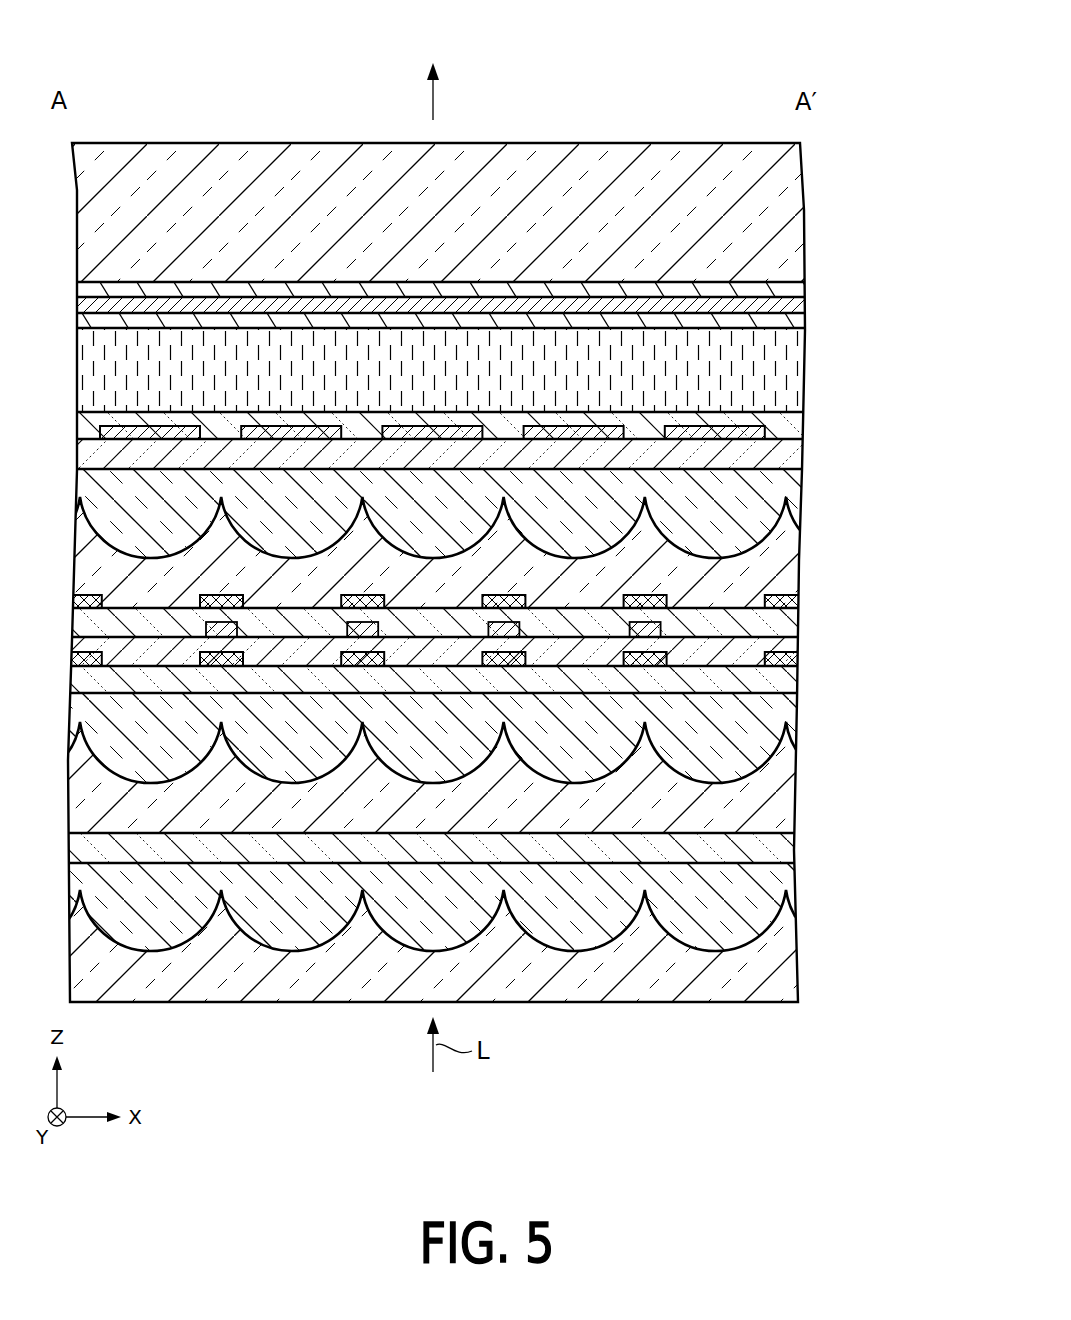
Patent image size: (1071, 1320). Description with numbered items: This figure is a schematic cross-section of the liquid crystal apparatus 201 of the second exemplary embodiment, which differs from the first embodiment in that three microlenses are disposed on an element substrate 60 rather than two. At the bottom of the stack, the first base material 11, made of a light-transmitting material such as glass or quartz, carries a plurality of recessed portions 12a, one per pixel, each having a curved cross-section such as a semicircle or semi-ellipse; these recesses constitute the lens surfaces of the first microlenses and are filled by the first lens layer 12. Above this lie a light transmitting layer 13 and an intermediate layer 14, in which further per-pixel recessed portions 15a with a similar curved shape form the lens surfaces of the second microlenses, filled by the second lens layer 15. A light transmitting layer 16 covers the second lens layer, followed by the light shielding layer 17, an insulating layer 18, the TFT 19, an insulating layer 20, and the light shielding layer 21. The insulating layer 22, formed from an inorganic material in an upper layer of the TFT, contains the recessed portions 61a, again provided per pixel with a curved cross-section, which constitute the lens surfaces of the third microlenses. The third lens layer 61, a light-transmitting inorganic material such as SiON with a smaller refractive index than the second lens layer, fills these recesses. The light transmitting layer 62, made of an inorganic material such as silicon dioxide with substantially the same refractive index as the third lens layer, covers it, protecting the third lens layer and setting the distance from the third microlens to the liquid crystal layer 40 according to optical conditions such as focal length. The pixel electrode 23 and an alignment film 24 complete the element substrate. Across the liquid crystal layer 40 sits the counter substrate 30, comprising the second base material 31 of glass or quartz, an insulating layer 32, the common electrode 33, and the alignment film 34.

The liquid crystal apparatus 201 is at (473, 504).
The counter substrate 30 is at (503, 249).
The second base material 31 is at (793, 205).
The insulating layer 32 is at (793, 292).
The common electrode 33 is at (795, 303).
The alignment film 34 is at (468, 334).
The liquid crystal layer 40 is at (800, 370).
The element substrate 60 is at (473, 681).
The alignment film 24 is at (468, 401).
The pixel electrode 23 is at (577, 426).
The light transmitting layer 62 is at (792, 450).
The third lens layer 61 is at (463, 528).
The recessed portion 61a is at (551, 551).
The insulating layer 22 is at (797, 555).
The light shielding layer 21 is at (512, 595).
The insulating layer 20 is at (793, 618).
The TFT 19 is at (649, 621).
The insulating layer 18 is at (793, 643).
The light shielding layer 17 is at (648, 651).
The light transmitting layer 16 is at (783, 678).
The second lens layer 15 is at (463, 753).
The recessed portion 15a is at (553, 777).
The intermediate layer 14 is at (780, 800).
The light transmitting layer 13 is at (793, 843).
The first lens layer 12 is at (463, 922).
The recessed portion 12a is at (553, 947).
The first base material 11 is at (463, 946).